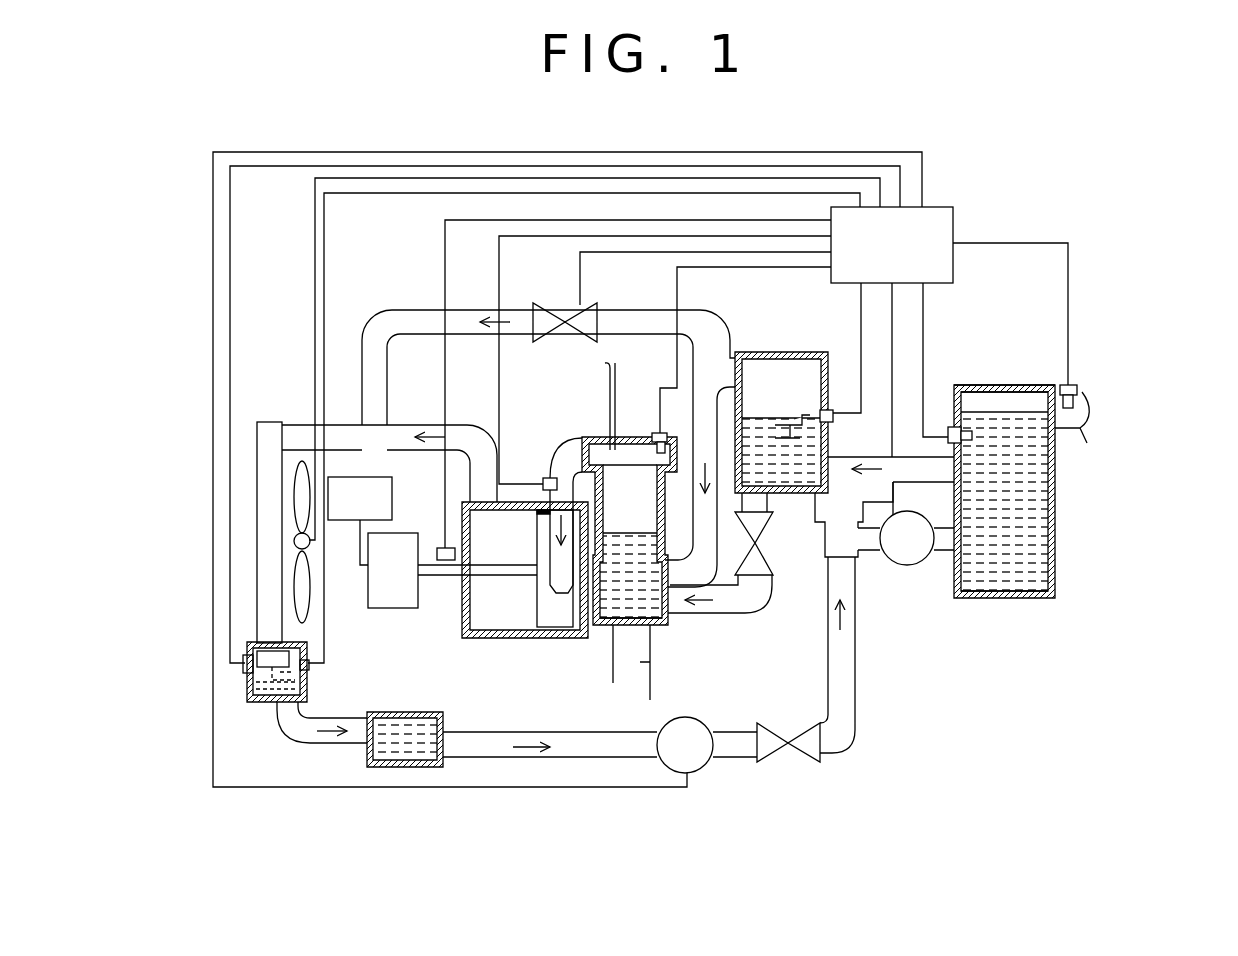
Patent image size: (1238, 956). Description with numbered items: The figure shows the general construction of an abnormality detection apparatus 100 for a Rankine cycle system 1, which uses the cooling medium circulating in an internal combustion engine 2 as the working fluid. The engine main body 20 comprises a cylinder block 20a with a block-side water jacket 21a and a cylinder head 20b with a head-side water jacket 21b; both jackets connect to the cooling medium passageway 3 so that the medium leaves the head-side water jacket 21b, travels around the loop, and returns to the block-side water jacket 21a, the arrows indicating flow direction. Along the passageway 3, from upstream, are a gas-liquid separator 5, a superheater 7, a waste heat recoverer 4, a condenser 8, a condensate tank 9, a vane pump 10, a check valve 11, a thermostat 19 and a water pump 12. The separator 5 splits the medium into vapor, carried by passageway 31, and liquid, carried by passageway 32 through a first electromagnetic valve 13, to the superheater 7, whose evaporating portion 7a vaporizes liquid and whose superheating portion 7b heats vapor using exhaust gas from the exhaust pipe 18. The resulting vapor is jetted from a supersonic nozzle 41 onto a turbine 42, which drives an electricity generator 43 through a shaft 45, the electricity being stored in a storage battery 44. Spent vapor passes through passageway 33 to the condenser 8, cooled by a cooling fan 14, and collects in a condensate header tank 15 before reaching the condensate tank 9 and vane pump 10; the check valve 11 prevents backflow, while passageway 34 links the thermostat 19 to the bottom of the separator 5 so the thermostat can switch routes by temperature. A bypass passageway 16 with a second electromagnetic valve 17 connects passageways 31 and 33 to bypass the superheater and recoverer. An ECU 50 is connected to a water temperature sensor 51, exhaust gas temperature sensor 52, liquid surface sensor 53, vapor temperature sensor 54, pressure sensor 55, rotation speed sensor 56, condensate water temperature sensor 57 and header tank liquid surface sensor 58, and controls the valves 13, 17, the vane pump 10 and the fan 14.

The Rankine cycle system 1 is at (1055, 150).
The internal combustion engine 2 is at (962, 708).
The cooling medium passageway 3 is at (566, 440).
The waste heat recoverer 4 is at (463, 657).
The gas-liquid separator 5 is at (790, 372).
The superheater 7 is at (690, 623).
The evaporating portion 7a is at (660, 627).
The superheating portion 7b is at (618, 455).
The condenser 8 is at (262, 583).
The condensate tank 9 is at (392, 768).
The vane pump 10 is at (660, 773).
The check valve 11 is at (770, 750).
The water pump 12 is at (918, 565).
The first electromagnetic valve 13 is at (767, 517).
The cooling fan 14 is at (300, 500).
The condensate header tank 15 is at (247, 690).
The bypass passageway 16 is at (425, 312).
The second electromagnetic valve 17 is at (560, 303).
The exhaust pipe 18 is at (607, 390).
The thermostat 19 is at (855, 583).
The engine main body 20 is at (1078, 565).
The cylinder block 20a is at (1055, 515).
The cylinder head 20b is at (1055, 450).
The block-side water jacket 21a is at (1003, 585).
The head-side water jacket 21b is at (1003, 405).
The passageway 31 is at (697, 405).
The passageway 32 is at (742, 612).
The passageway 33 is at (305, 425).
The passageway 34 is at (798, 527).
The supersonic nozzle 41 is at (645, 700).
The turbine 42 is at (547, 637).
The electricity generator 43 is at (397, 590).
The storage battery 44 is at (347, 507).
The shaft 45 is at (455, 572).
The ECU 50 is at (935, 207).
The water temperature sensor 51 is at (952, 427).
The exhaust gas temperature sensor 52 is at (1068, 385).
The liquid surface sensor 53 is at (828, 410).
The vapor temperature sensor 54 is at (650, 433).
The pressure sensor 55 is at (543, 484).
The rotation speed sensor 56 is at (443, 548).
The condensate water temperature sensor 57 is at (245, 665).
The header tank liquid surface sensor 58 is at (307, 675).
The abnormality detection apparatus 100 is at (1152, 833).